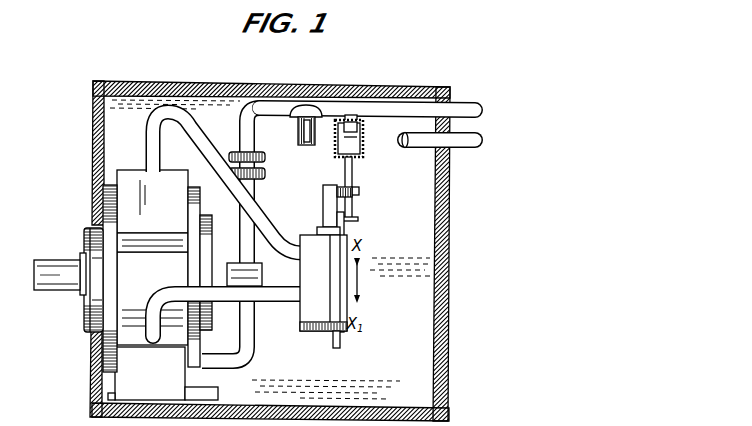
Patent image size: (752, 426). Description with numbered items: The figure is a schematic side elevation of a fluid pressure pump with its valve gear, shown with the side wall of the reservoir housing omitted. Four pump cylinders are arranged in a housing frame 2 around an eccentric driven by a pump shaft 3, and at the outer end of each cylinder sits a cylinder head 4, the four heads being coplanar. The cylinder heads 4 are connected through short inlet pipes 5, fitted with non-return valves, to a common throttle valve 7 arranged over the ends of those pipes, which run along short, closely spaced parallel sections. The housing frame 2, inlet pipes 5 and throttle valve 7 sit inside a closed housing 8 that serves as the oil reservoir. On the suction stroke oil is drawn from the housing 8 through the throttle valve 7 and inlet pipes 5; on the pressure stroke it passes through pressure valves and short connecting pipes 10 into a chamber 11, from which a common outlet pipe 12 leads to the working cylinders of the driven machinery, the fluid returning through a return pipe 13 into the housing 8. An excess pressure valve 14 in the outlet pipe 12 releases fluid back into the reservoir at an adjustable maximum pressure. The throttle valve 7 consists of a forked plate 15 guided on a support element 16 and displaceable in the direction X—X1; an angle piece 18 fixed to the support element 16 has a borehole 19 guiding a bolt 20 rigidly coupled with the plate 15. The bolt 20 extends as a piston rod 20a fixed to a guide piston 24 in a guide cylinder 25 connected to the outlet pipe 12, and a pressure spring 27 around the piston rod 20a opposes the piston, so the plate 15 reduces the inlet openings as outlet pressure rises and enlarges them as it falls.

The housing frame 2 is at (105, 301).
The pump shaft 3 is at (47, 271).
The cylinder head 4 is at (122, 196).
The inlet pipe 5 is at (201, 151).
The throttle valve 7 is at (349, 240).
The closed housing 8 is at (445, 250).
The connecting pipe 10 is at (258, 206).
The chamber 11 is at (270, 282).
The outlet pipe 12 is at (263, 100).
The return pipe 13 is at (453, 148).
The excess pressure valve 14 is at (298, 128).
The forked plate 15 is at (341, 341).
The support element 16 is at (318, 332).
The angle piece 18 is at (323, 188).
The borehole 19 is at (360, 191).
The bolt 20 is at (345, 207).
The piston rod 20a is at (354, 166).
The guide piston 24 is at (364, 132).
The guide cylinder 25 is at (338, 117).
The pressure spring 27 is at (338, 150).